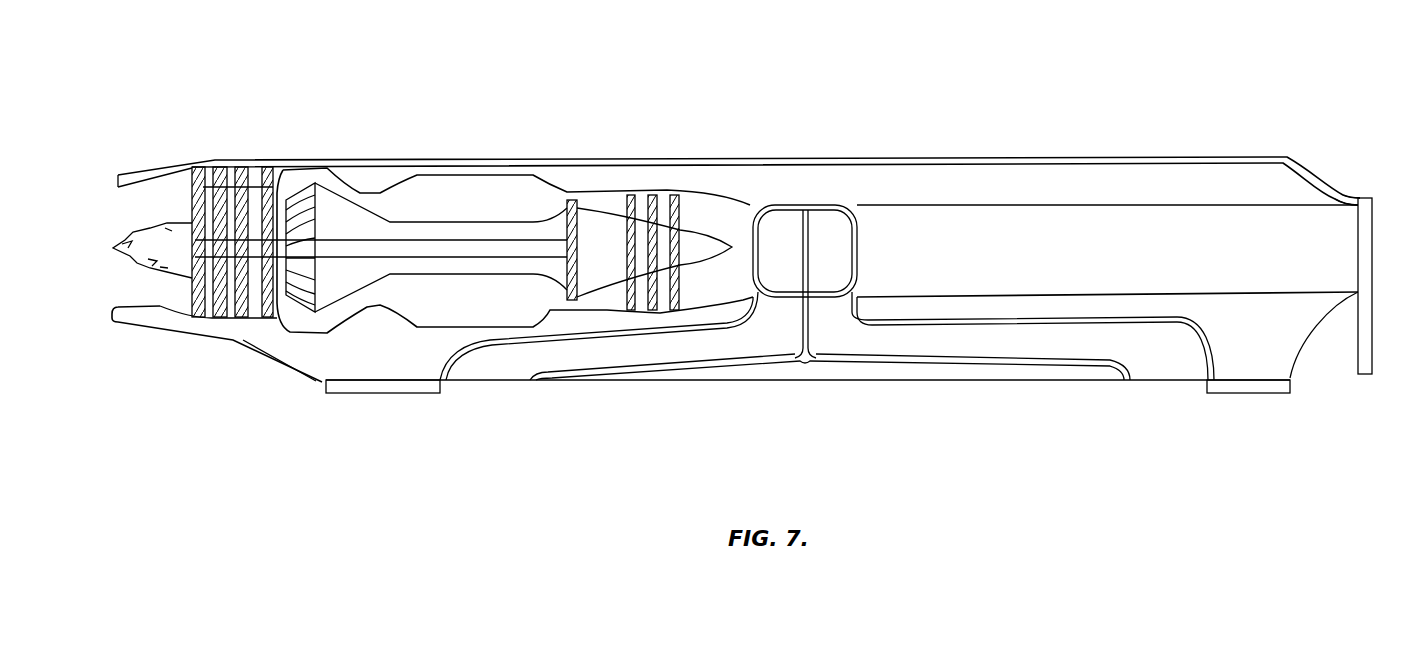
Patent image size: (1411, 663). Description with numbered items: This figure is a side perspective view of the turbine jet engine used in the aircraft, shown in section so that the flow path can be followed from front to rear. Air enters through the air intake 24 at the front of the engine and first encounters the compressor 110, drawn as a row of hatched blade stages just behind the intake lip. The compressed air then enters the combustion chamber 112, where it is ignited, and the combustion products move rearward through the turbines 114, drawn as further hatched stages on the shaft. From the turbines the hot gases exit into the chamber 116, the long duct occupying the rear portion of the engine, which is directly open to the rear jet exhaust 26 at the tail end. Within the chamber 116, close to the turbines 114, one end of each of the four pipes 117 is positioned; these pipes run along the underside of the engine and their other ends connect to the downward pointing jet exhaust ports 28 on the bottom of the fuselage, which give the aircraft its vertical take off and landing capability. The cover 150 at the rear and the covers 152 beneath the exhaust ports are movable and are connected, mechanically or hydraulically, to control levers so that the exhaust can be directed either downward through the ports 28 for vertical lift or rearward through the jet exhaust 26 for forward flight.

The air intake 24 is at (170, 222).
The jet exhaust 26 is at (1373, 222).
The jet exhaust ports 28 is at (487, 367).
The compressor 110 is at (240, 167).
The combustion chamber 112 is at (455, 194).
The turbines 114 is at (675, 197).
The chamber 116 is at (1097, 259).
The pipes 117 is at (667, 358).
The cover 150 is at (1358, 338).
The covers 152 is at (375, 393).